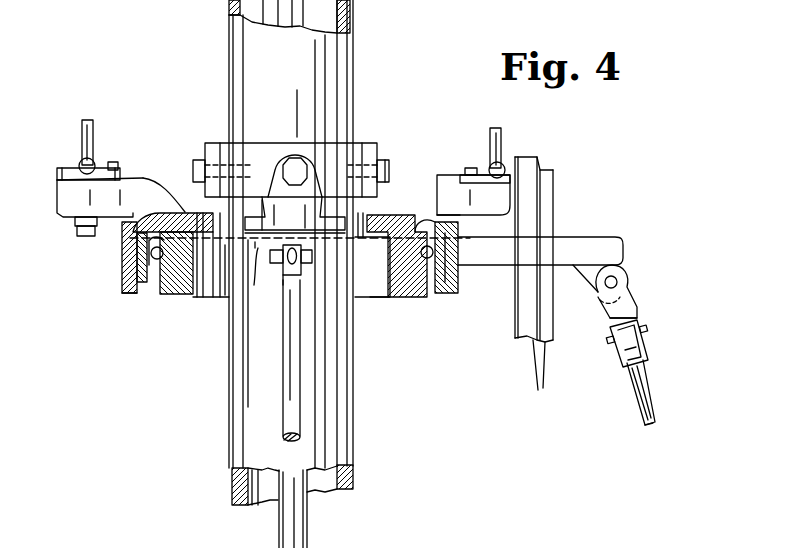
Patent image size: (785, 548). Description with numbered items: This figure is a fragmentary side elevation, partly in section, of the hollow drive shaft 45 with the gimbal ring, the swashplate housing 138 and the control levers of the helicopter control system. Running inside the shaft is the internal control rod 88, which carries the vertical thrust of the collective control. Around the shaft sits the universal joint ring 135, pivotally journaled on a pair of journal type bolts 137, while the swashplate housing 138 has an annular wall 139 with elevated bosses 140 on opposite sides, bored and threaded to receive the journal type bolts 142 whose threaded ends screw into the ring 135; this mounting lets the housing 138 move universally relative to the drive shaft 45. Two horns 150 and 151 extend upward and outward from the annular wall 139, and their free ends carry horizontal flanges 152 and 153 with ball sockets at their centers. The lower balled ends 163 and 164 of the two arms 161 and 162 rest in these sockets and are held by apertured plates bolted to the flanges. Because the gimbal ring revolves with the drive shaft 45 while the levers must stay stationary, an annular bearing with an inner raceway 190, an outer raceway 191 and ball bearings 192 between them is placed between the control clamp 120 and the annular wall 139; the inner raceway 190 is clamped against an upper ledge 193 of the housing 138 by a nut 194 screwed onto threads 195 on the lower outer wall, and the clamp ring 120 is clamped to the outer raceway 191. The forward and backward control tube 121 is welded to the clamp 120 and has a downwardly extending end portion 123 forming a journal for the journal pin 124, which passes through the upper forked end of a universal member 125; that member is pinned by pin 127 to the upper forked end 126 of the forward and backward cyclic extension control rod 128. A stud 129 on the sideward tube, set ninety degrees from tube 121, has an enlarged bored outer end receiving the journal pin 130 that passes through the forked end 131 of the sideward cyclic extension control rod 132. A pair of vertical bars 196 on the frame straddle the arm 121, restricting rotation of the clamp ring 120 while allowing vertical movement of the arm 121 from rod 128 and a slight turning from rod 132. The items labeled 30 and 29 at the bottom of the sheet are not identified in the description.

The drive shaft 45 is at (322, 75).
The internal control rod 88 is at (308, 529).
The control clamp 120 is at (124, 294).
The forward and backward control tube 121 is at (500, 267).
The downwardly extending end portion 123 is at (625, 268).
The journal pin 124 is at (618, 282).
The universal member 125 is at (640, 312).
The upper forked end 126 is at (616, 356).
The pin 127 is at (650, 341).
The forward and backward cyclic extension control rod 128 is at (650, 408).
The stud 129 is at (230, 282).
The journal pin 130 is at (286, 262).
The forked end 131 is at (297, 278).
The sideward cyclic extension control rod 132 is at (287, 418).
The universal joint ring 135 is at (338, 155).
The journal type bolts 137 is at (388, 165).
The swashplate housing 138 is at (392, 212).
The annular wall 139 is at (404, 300).
The elevated bosses 140 is at (275, 190).
The journal type bolts 142 is at (292, 160).
The horn 150 is at (143, 182).
The horn 151 is at (437, 182).
The horizontal flange 152 is at (60, 185).
The horizontal flange 153 is at (475, 224).
The arm 161 is at (80, 130).
The arm 162 is at (502, 132).
The lower balled end 163 is at (80, 160).
The lower balled end 164 is at (513, 152).
The inner raceway 190 is at (162, 297).
The outer raceway 191 is at (122, 252).
The ball bearings 192 is at (125, 270).
The upper ledge 193 is at (172, 214).
The nut 194 is at (416, 296).
The threads 195 is at (390, 330).
The vertical bars 196 is at (544, 376).
The base member 30 is at (505, 547).
The frame member 29 is at (703, 547).